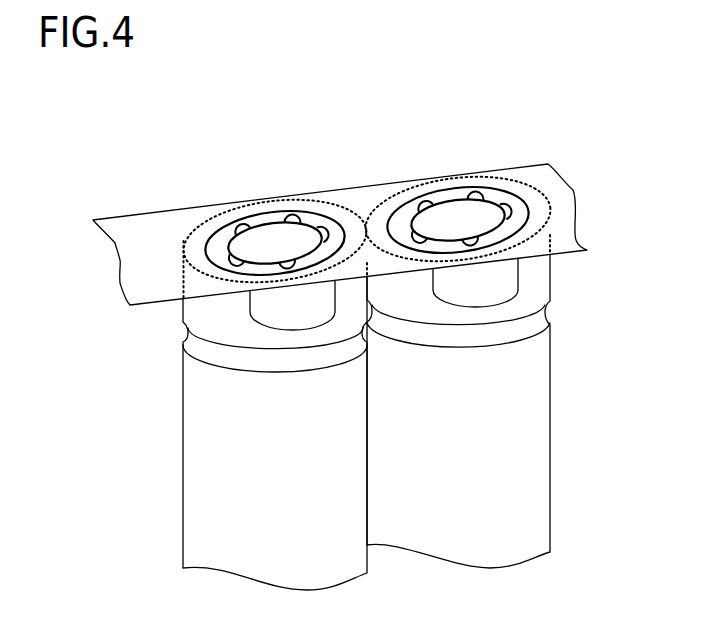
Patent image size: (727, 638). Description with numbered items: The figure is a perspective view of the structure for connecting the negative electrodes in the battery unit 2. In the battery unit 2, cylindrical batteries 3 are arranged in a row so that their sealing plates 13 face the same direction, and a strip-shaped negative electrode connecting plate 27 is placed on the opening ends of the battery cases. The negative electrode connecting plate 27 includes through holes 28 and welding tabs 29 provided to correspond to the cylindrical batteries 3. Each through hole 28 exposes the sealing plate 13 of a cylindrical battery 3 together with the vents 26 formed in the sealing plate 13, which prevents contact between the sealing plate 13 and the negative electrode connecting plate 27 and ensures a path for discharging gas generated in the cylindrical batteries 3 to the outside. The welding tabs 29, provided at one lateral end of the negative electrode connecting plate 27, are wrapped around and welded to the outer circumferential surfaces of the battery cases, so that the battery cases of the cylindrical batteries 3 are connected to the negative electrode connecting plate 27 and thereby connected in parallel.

The battery unit 2 is at (301, 378).
The cylindrical battery 3 is at (198, 457).
The sealing plate 13 is at (277, 240).
The vents 26 is at (250, 230).
The negative electrode connecting plate 27 is at (168, 210).
The through holes 28 is at (272, 213).
The welding tabs 29 is at (277, 313).